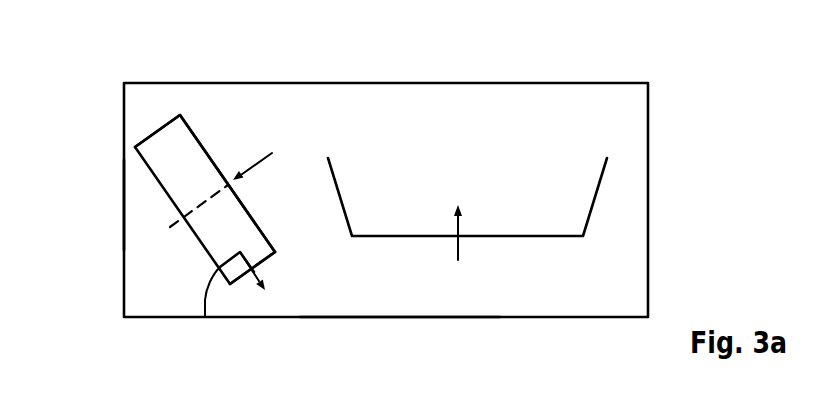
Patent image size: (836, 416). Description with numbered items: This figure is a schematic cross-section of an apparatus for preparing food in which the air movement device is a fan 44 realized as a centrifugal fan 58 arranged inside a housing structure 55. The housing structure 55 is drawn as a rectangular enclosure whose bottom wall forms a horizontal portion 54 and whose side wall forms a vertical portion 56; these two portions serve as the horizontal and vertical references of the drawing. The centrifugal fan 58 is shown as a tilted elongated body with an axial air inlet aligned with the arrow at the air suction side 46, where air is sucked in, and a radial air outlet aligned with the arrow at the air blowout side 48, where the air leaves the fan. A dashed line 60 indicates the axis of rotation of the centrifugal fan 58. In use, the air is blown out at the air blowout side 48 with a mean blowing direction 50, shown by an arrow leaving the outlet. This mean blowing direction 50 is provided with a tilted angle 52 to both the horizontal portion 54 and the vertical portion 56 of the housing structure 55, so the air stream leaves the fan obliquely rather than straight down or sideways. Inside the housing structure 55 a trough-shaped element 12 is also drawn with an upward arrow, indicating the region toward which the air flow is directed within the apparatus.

The component carrier / tray 12 is at (526, 157).
The fan 44 is at (140, 153).
The air suction side 46 is at (225, 183).
The air blowout side 48 is at (278, 258).
The mean blowing direction 50 is at (276, 273).
The tilted angle 52 is at (203, 297).
The horizontal portion 54 is at (430, 317).
The housing structure 55 is at (666, 181).
The vertical portion 56 is at (124, 206).
The centrifugal fan 58 is at (152, 116).
The line 60 is at (168, 230).